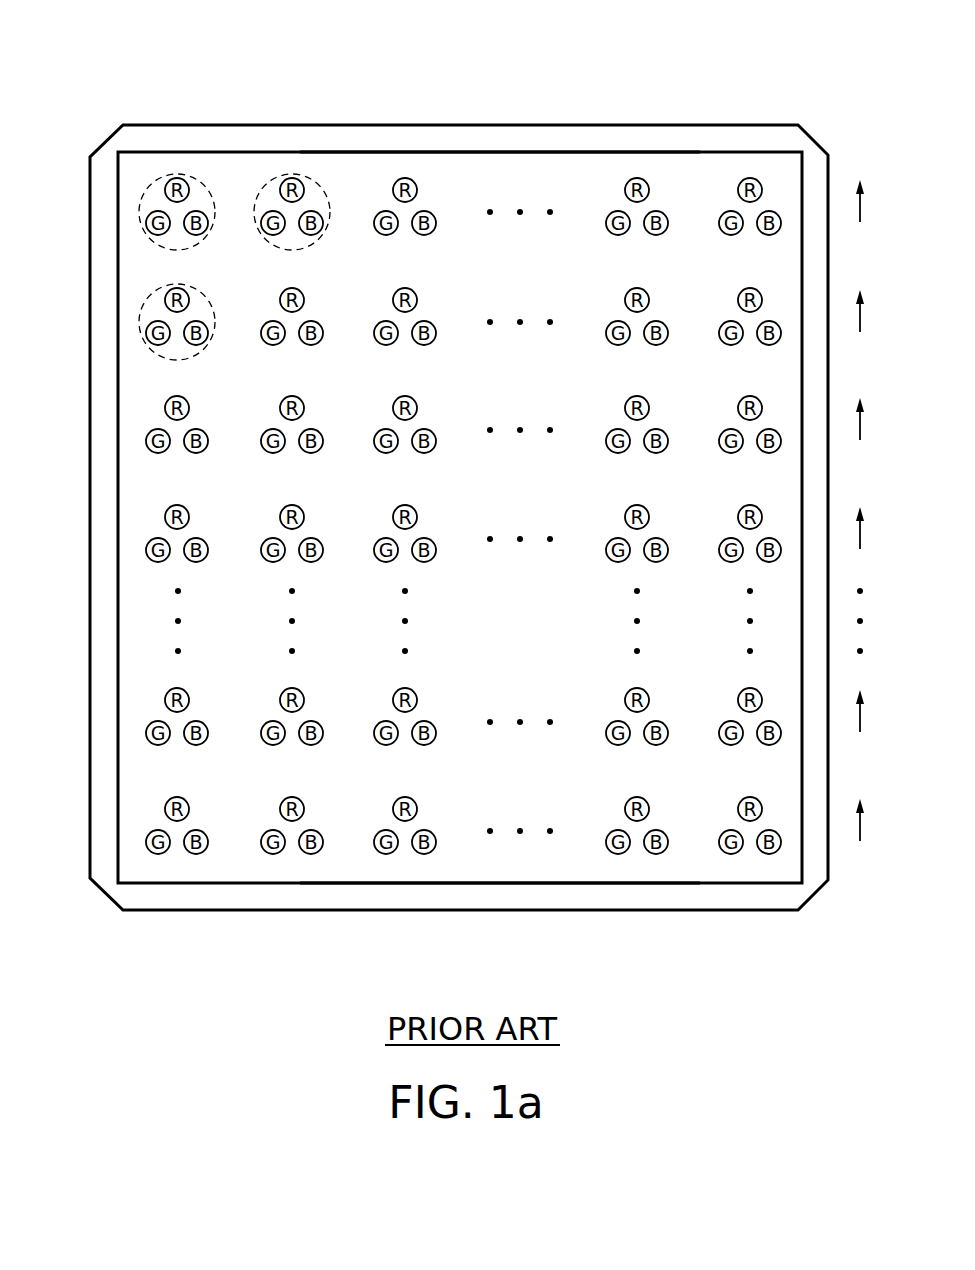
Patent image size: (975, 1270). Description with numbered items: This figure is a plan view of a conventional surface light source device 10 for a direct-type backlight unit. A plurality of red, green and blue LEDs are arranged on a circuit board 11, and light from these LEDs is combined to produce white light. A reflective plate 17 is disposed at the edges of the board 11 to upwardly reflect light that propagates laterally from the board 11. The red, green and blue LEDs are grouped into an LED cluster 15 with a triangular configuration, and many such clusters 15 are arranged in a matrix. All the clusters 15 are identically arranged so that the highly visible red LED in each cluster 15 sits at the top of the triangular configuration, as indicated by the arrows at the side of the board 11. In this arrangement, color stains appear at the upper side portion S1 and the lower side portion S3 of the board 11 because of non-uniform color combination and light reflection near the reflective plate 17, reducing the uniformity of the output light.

The surface light source device 10 is at (478, 37).
The circuit board 11 is at (459, 168).
The LED cluster 15 is at (182, 172).
The reflective plate 17 is at (630, 137).
The upper side portion S1 is at (557, 152).
The lower side portion S3 is at (595, 883).